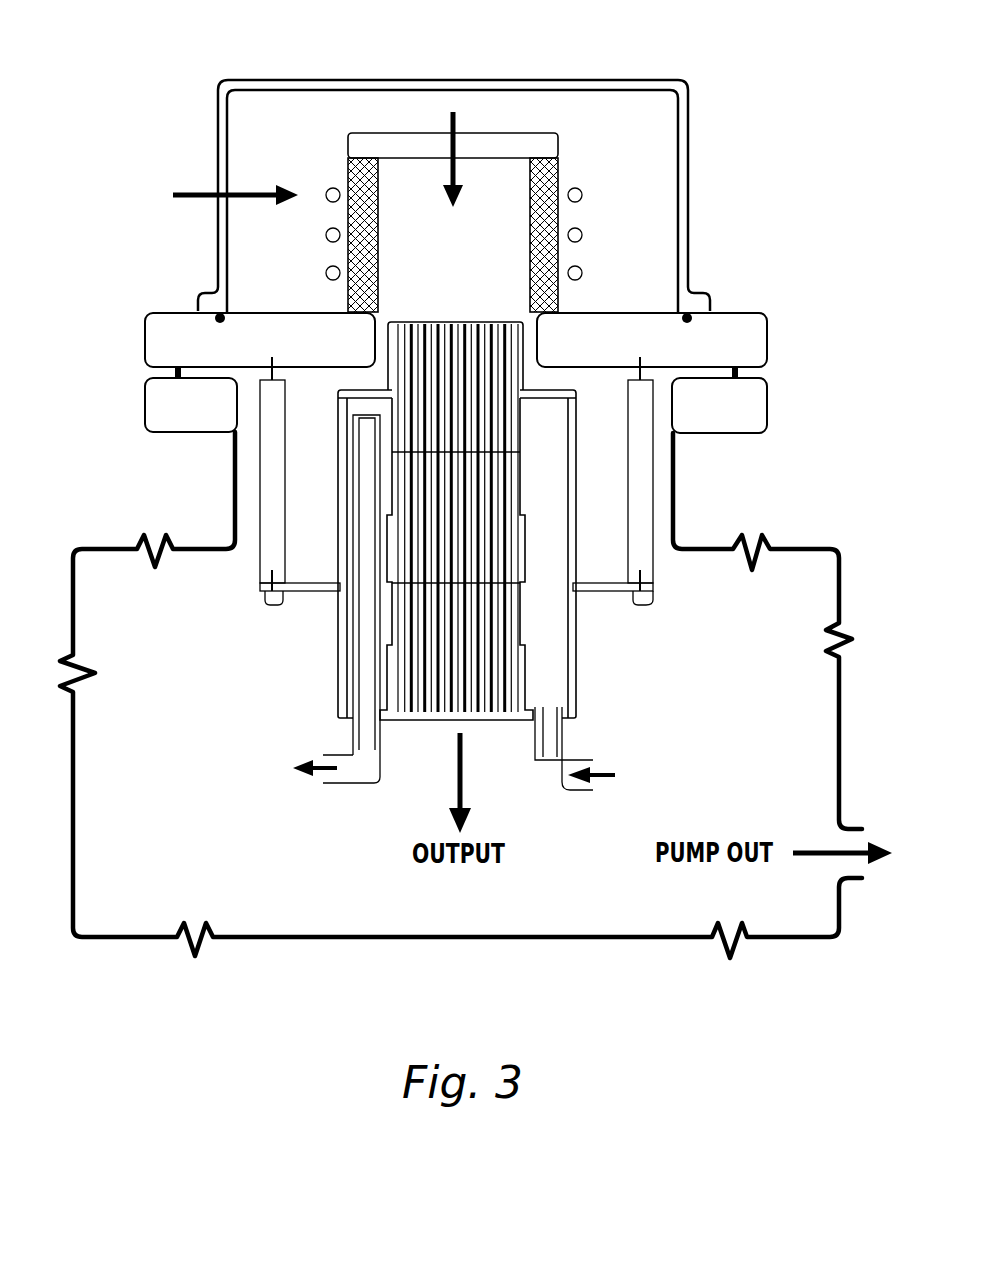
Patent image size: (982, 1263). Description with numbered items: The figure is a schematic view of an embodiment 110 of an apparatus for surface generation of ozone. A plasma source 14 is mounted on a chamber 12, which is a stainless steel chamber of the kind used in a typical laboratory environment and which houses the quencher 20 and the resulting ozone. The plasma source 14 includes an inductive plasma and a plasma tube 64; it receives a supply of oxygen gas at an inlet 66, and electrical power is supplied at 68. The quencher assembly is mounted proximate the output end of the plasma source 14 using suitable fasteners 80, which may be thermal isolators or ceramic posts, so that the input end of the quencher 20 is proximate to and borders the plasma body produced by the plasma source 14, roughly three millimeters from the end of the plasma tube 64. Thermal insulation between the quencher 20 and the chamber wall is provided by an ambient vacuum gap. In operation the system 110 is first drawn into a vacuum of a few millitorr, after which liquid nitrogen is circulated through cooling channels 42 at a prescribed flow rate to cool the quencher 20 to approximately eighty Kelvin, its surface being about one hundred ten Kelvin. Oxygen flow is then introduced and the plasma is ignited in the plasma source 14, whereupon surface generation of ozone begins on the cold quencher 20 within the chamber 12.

The embodiment 110 is at (158, 70).
The chamber 12 is at (115, 548).
The plasma source 14 is at (690, 206).
The quencher 20 is at (338, 628).
The cooling channels 42 is at (365, 676).
The plasma tube 64 is at (468, 270).
The inlet 66 is at (460, 124).
The electrical power supply point 68 is at (188, 193).
The fasteners 80 is at (262, 568).